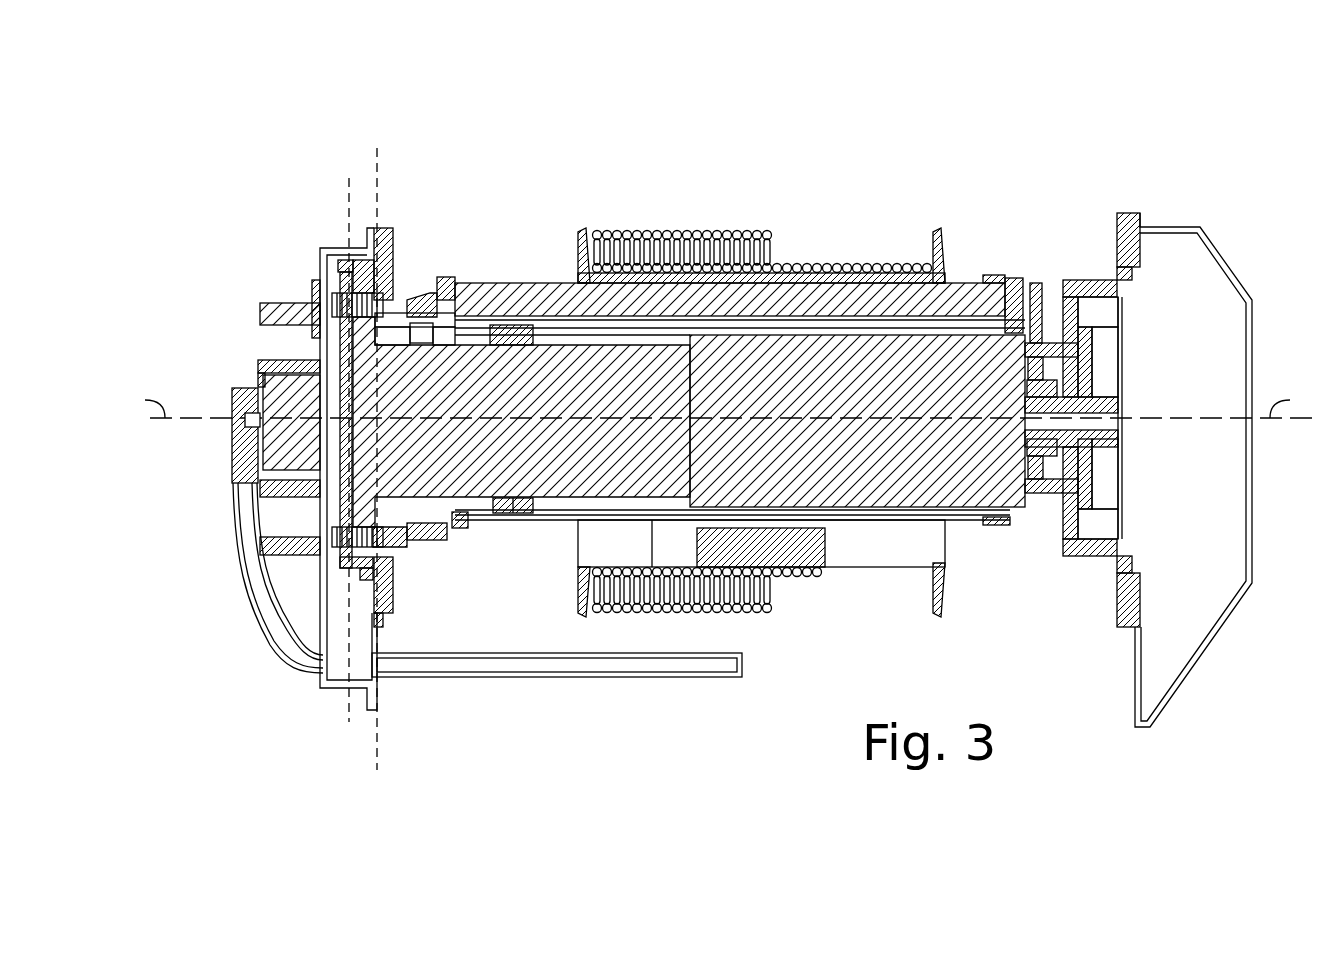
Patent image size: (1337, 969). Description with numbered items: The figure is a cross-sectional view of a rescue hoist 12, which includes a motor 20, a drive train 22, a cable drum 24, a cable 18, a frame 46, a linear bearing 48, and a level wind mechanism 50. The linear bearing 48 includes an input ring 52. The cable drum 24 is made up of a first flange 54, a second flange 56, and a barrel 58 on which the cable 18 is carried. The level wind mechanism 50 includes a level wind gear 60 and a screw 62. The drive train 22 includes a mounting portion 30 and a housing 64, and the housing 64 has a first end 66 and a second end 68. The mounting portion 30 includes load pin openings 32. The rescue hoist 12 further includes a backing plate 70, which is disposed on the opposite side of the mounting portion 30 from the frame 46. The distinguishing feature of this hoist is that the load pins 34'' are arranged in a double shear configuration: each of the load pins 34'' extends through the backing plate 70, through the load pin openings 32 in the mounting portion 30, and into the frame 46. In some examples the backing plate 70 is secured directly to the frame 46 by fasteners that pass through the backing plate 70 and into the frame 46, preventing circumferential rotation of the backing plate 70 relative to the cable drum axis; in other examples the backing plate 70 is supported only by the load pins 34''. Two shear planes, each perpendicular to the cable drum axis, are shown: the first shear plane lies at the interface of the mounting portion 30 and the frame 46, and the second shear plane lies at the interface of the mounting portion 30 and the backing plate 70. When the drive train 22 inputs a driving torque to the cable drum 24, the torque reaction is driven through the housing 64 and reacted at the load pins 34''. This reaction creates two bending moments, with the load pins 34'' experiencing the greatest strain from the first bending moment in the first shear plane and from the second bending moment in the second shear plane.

The rescue hoist 12 is at (722, 414).
The cable 18 is at (748, 226).
The motor 20 is at (1003, 490).
The drive train 22 is at (560, 505).
The cable drum 24 is at (955, 550).
The mounting portion 30 is at (440, 322).
The load pin openings 32 is at (332, 250).
The load pins 34'' is at (414, 417).
The frame 46 is at (380, 228).
The linear bearing 48 is at (465, 530).
The level wind mechanism 50 is at (962, 278).
The input ring 52 is at (515, 514).
The first flange 54 is at (576, 262).
The second flange 56 is at (940, 250).
The barrel 58 is at (826, 265).
The level wind gear 60 is at (1040, 297).
The screw 62 is at (996, 300).
The housing 64 is at (480, 357).
The first end 66 is at (793, 564).
The second end 68 is at (345, 483).
The backing plate 70 is at (332, 322).